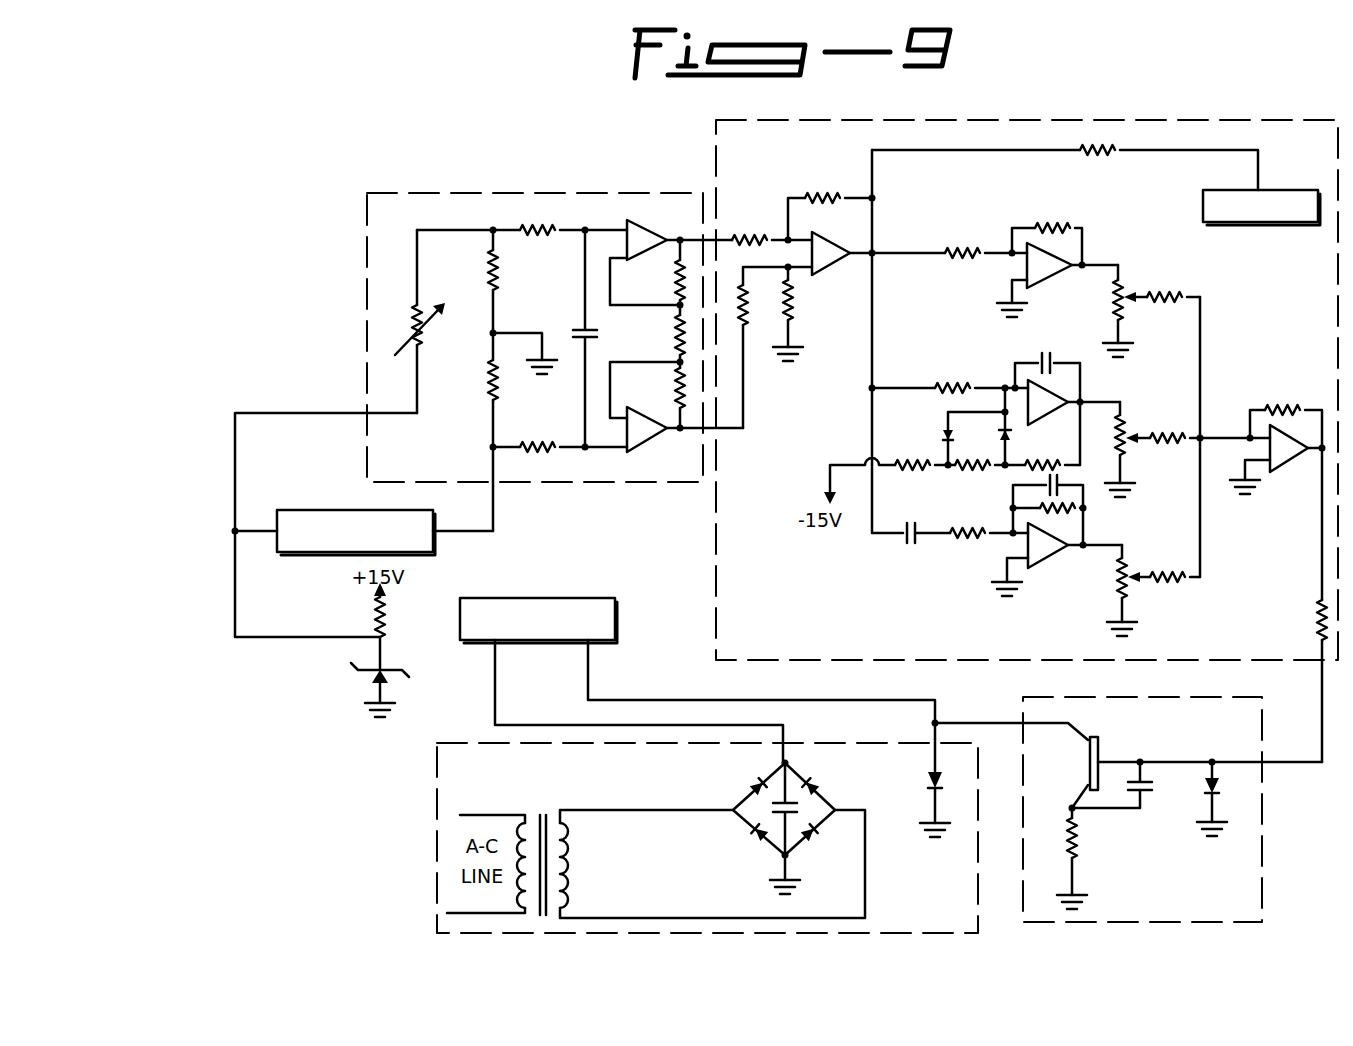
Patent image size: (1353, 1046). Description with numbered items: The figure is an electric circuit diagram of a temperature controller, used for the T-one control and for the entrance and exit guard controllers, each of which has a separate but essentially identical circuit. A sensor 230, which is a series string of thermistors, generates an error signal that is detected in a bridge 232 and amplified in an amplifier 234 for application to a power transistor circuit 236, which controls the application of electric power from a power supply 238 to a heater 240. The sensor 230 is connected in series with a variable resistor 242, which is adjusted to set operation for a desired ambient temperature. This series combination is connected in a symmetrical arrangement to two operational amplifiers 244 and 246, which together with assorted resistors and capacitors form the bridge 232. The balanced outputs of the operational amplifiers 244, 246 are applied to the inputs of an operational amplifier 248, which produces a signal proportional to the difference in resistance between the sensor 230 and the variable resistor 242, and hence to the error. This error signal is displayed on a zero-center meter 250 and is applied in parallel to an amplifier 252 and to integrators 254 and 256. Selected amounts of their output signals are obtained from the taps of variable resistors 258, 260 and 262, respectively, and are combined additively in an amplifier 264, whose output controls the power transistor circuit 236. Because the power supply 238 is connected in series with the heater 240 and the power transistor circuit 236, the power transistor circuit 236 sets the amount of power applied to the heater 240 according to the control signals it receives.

The sensor 230 is at (350, 548).
The bridge 232 is at (362, 298).
The amplifier 234 is at (1022, 128).
The power transistor circuit 236 is at (1252, 820).
The power supply 238 is at (428, 786).
The heater 240 is at (500, 600).
The variable resistor 242 is at (400, 320).
The operational amplifier 244 is at (655, 255).
The operational amplifier 246 is at (646, 426).
The operational amplifier 248 is at (818, 265).
The zero-center meter 250 is at (1212, 226).
The amplifier 252 is at (1046, 277).
The integrator 254 is at (1036, 418).
The integrator 256 is at (1048, 556).
The variable resistor 258 is at (1136, 296).
The variable resistor 260 is at (1132, 424).
The variable resistor 262 is at (1132, 577).
The amplifier 264 is at (1290, 455).